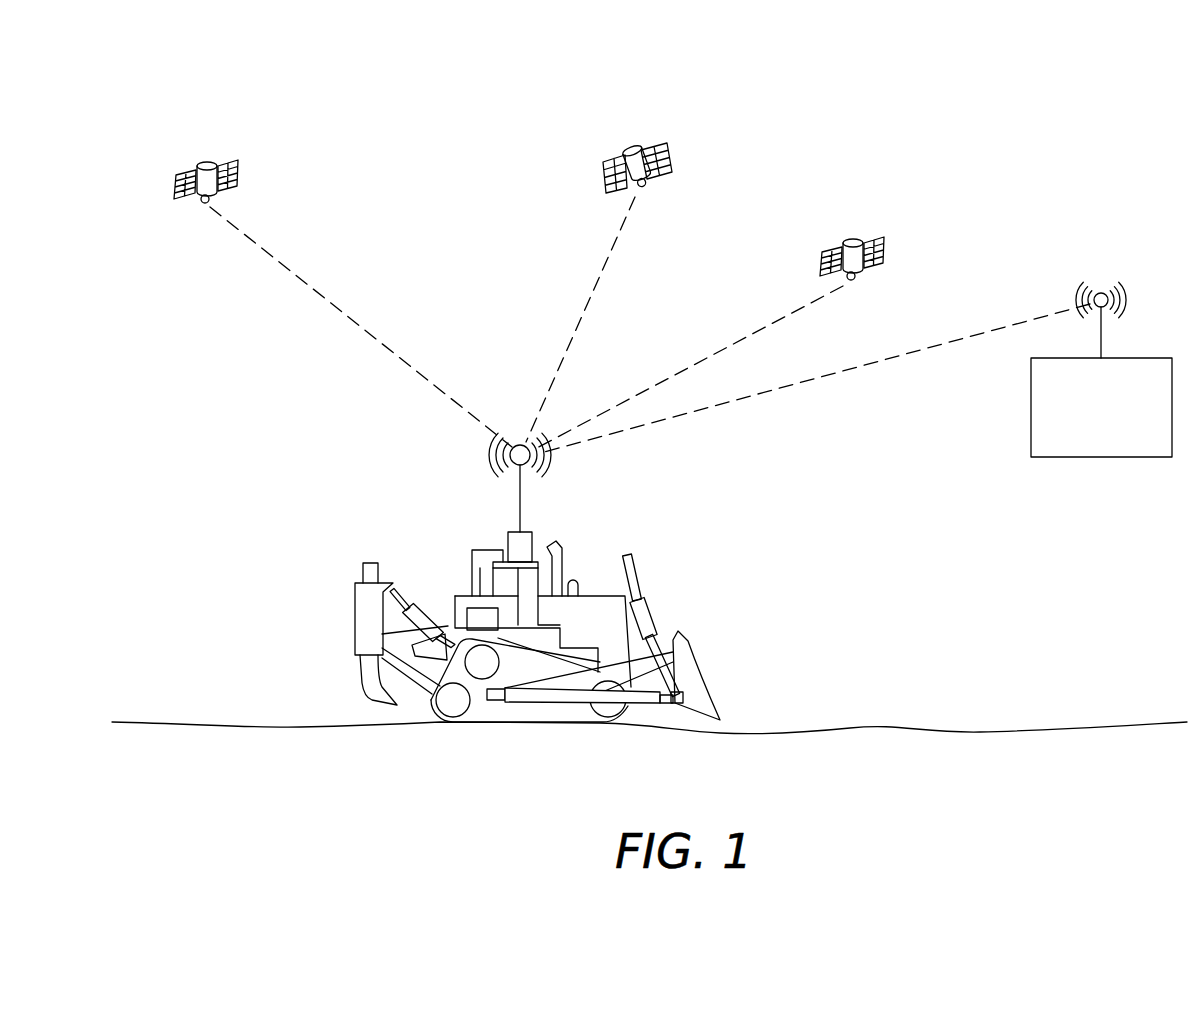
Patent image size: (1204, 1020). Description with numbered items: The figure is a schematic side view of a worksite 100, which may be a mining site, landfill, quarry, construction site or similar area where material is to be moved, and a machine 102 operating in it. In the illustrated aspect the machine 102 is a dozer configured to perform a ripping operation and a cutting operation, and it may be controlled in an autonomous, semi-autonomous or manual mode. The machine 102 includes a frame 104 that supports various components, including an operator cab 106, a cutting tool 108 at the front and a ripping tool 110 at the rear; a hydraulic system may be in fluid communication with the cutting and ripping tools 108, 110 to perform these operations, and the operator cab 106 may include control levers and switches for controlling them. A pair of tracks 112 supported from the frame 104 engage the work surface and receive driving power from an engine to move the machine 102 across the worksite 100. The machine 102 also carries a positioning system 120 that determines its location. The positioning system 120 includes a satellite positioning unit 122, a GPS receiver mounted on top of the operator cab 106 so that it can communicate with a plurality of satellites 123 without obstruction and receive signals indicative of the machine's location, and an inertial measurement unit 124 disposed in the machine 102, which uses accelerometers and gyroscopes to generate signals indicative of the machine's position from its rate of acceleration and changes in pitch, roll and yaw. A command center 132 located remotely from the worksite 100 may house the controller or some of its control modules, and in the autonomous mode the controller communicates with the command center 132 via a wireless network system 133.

The worksite 100 is at (862, 572).
The machine 102 is at (397, 528).
The frame 104 is at (588, 590).
The operator cab 106 is at (493, 558).
The cutting tool 108 is at (692, 642).
The ripping tool 110 is at (355, 597).
The pair of tracks 112 is at (428, 710).
The positioning system 120 is at (1050, 180).
The satellite positioning unit 122 is at (515, 530).
The satellites 123 is at (210, 162).
The inertial measurement unit 124 is at (448, 614).
The command center 132 is at (1117, 421).
The wireless network system 133 is at (1104, 292).